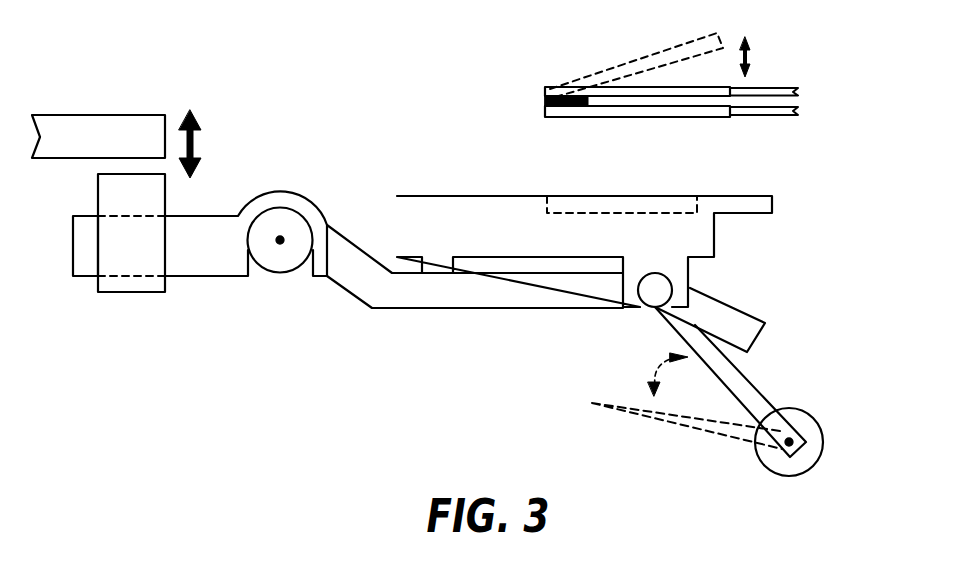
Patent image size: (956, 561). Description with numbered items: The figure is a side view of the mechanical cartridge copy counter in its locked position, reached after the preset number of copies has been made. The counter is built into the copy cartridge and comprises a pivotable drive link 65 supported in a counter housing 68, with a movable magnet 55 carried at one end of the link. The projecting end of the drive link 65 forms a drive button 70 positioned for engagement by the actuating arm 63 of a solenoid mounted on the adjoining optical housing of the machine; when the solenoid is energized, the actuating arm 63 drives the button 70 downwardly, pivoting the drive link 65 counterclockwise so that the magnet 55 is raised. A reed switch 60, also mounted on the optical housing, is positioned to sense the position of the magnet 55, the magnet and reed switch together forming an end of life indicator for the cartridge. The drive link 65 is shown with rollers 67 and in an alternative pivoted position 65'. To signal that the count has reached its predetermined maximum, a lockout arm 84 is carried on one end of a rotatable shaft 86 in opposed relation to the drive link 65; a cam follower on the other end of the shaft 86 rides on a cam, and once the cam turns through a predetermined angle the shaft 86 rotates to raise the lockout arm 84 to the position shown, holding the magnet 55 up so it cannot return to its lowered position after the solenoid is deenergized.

The actuating arm 63 is at (123, 115).
The drive button 70 is at (137, 293).
The drive link 65 is at (394, 271).
The roller 67 is at (272, 270).
The counter housing 68 is at (442, 197).
The magnet 55 is at (657, 207).
The reed switch 60 is at (545, 98).
The lever arm (alternate) 65' is at (736, 312).
The lockout arm 84 is at (747, 380).
The rotatable shaft 86 is at (822, 453).